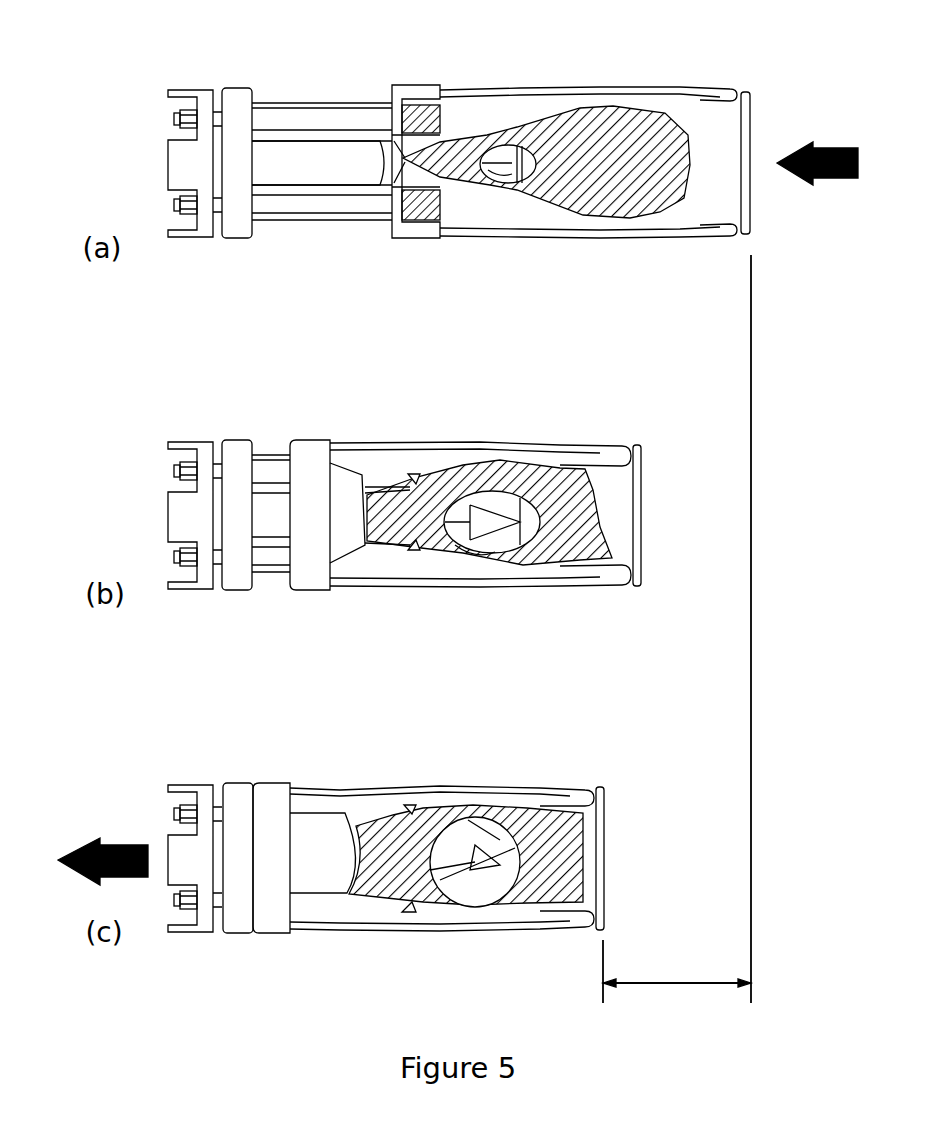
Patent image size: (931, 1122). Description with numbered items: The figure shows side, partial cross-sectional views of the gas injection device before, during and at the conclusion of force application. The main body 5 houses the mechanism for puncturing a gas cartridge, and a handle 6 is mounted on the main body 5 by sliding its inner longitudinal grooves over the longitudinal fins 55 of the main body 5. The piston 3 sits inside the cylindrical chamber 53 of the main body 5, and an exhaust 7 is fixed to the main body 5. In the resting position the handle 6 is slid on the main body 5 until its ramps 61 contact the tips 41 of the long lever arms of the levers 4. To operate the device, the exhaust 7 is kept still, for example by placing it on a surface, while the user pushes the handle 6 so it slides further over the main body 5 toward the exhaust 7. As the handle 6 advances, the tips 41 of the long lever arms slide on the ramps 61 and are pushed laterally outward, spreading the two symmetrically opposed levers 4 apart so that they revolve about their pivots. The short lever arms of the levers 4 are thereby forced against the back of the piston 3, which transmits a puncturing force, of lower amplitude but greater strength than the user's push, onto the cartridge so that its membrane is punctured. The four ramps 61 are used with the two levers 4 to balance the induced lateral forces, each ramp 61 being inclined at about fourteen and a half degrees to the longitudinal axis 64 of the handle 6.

In FIG. 5b, the piston 3 is at (463, 550).
In FIG. 5c, the piston 3 is at (453, 907).
In FIG. 5a, the levers 4 is at (517, 147).
In FIG. 5b, the levers 4 is at (507, 538).
In FIG. 5c, the levers 4 is at (490, 837).
In FIG. 5a, the main body 5 is at (238, 88).
In FIG. 5b, the main body 5 is at (238, 440).
In FIG. 5c, the main body 5 is at (240, 783).
In FIG. 5a, the handle 6 is at (707, 90).
In FIG. 5b, the handle 6 is at (630, 446).
In FIG. 5c, the handle 6 is at (266, 783).
In FIG. 5a, the exhaust 7 is at (182, 90).
In FIG. 5b, the exhaust 7 is at (183, 440).
In FIG. 5c, the exhaust 7 is at (203, 933).
In FIG. 5a, the tips of long lever arms 41 is at (406, 156).
In FIG. 5b, the tips of long lever arms 41 is at (412, 478).
In FIG. 5c, the tips of long lever arms 41 is at (410, 808).
In FIG. 5a, the cylindrical chamber 53 is at (342, 170).
In FIG. 5b, the cylindrical chamber 53 is at (273, 522).
In FIG. 5a, the longitudinal fins 55 is at (272, 118).
In FIG. 5a, the ramps 61 is at (580, 110).
In FIG. 5b, the ramps 61 is at (462, 467).
In FIG. 5c, the ramps 61 is at (455, 806).
In FIG. 5c, the longitudinal axis 64 is at (603, 983).